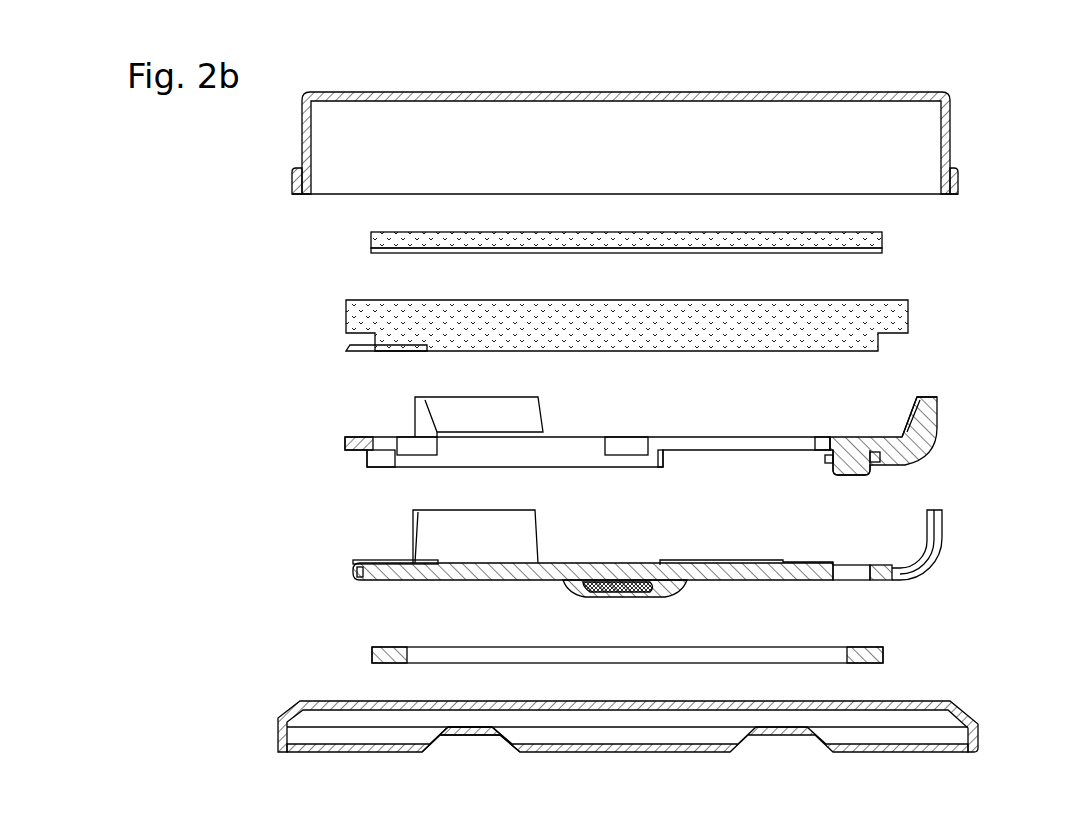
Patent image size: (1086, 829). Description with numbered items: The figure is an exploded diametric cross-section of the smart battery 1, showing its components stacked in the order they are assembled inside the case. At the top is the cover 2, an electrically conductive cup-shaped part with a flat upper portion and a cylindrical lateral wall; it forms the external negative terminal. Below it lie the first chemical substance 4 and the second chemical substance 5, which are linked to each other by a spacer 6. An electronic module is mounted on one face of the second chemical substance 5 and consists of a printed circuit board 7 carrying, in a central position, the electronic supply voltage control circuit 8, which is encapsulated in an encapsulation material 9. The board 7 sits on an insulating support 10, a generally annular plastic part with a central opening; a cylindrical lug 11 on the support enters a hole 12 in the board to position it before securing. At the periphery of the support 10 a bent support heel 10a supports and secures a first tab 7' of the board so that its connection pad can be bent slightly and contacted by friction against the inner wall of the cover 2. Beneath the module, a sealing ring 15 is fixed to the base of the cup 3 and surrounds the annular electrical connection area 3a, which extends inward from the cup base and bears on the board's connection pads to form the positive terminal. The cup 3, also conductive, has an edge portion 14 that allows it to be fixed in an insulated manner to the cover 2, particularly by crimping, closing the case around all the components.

The smart battery 1 is at (1038, 120).
The cover 2 is at (947, 140).
The cup 3 is at (930, 752).
The electrical connection area 3a is at (487, 740).
The first chemical substance 4 is at (870, 246).
The second chemical substance 5 is at (886, 322).
The spacer 6 is at (858, 253).
The printed circuit board 7 is at (622, 564).
The first tab 7' is at (935, 545).
The electronic circuit 8 is at (585, 590).
The encapsulation material 9 is at (670, 590).
The insulating support 10 is at (930, 450).
The support heel 10a is at (935, 405).
The cylindrical lug 11 is at (860, 475).
The hole 12 is at (858, 572).
The edge portion 14 is at (968, 710).
The sealing ring 15 is at (885, 658).